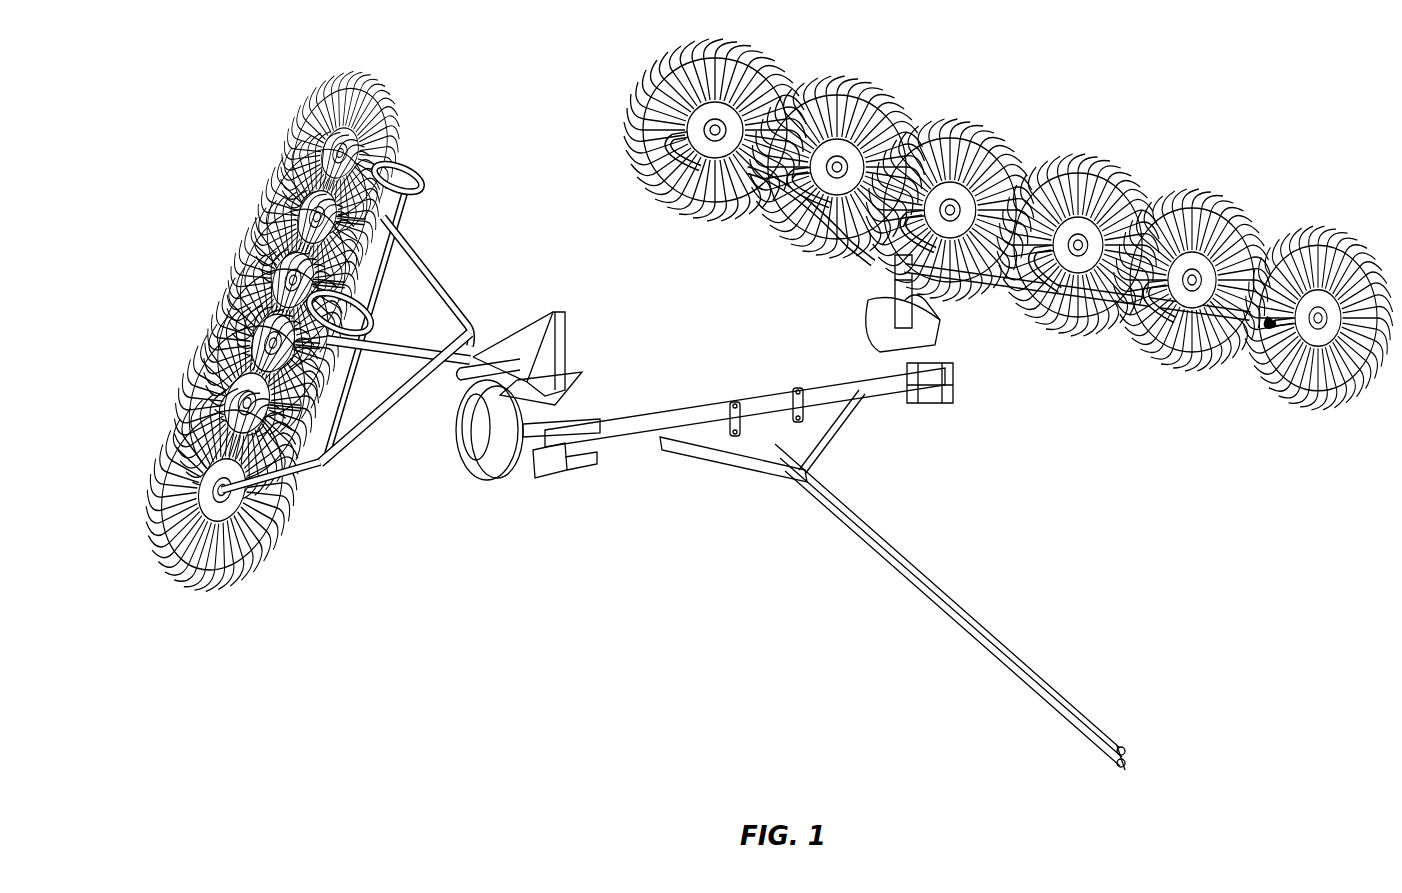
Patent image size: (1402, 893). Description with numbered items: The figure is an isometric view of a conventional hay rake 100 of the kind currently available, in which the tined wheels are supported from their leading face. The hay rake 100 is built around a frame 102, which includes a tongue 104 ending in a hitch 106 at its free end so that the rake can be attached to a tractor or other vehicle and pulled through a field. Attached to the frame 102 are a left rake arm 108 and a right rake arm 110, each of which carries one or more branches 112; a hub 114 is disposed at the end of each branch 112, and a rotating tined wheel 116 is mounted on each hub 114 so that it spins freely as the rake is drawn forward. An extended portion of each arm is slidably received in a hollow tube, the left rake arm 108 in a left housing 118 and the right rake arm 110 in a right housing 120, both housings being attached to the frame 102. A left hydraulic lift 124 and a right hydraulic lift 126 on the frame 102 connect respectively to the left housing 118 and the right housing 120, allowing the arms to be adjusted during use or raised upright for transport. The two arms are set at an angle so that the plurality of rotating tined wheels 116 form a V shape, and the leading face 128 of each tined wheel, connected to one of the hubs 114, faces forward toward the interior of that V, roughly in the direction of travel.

The hay rake 100 is at (166, 97).
The frame 102 is at (738, 453).
The tongue 104 is at (923, 567).
The hitch 106 is at (1125, 748).
The left rake arm 108 is at (325, 321).
The right rake arm 110 is at (993, 271).
The branch 112 is at (420, 178).
The hub 114 is at (363, 140).
The rotating tined wheel 116 is at (313, 93).
The left housing 118 is at (490, 337).
The right housing 120 is at (947, 303).
The left hydraulic lift 124 is at (613, 460).
The right hydraulic lift 126 is at (847, 383).
The leading face 128 is at (1322, 407).